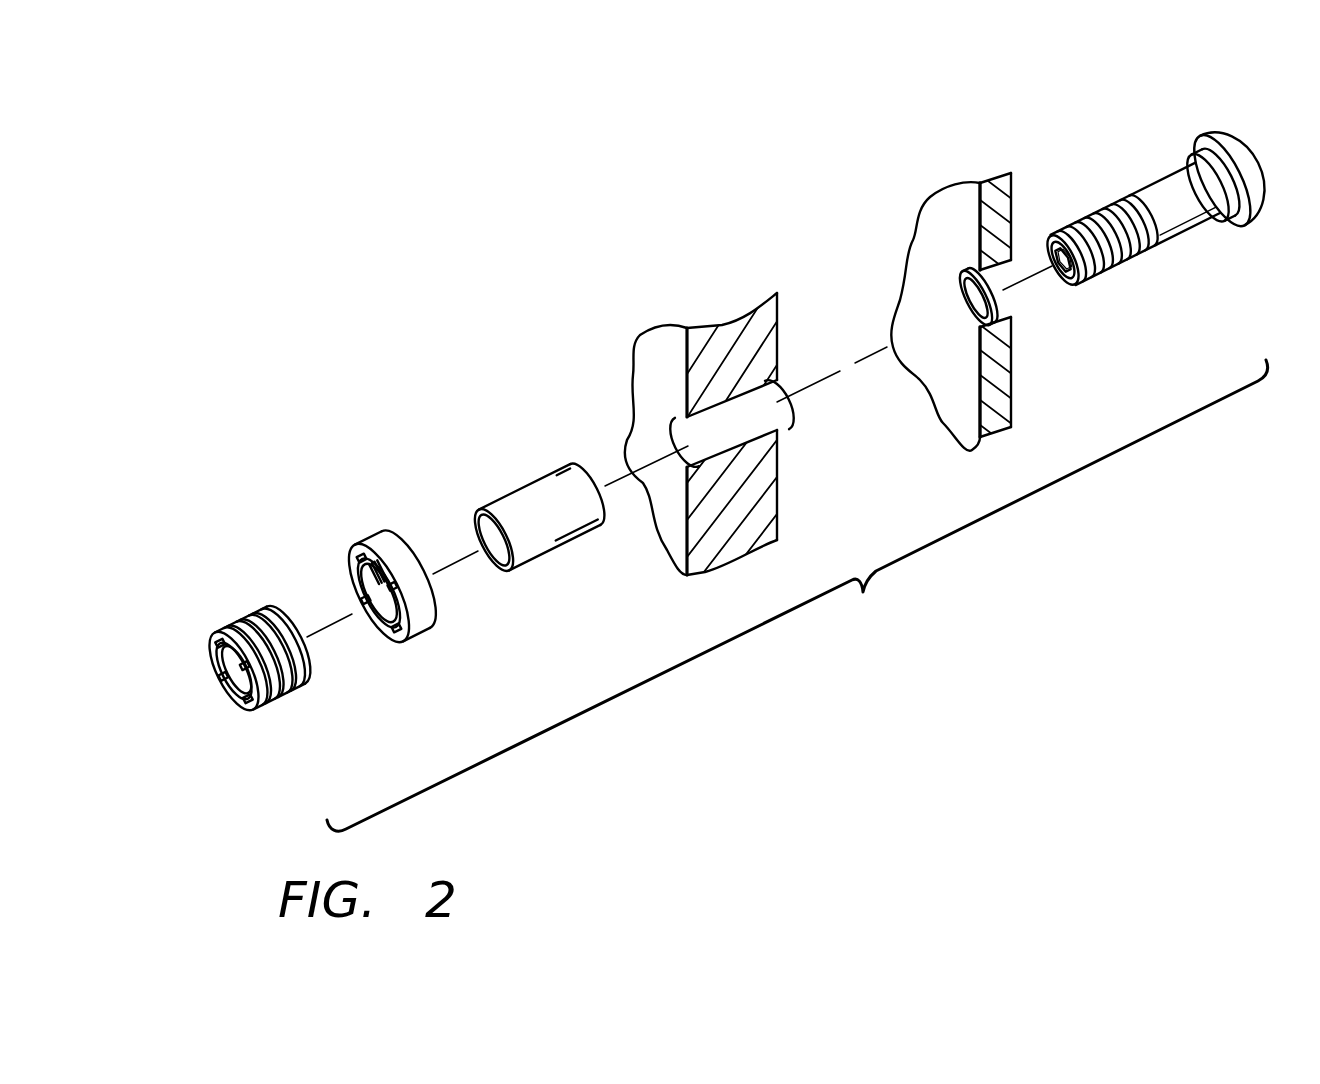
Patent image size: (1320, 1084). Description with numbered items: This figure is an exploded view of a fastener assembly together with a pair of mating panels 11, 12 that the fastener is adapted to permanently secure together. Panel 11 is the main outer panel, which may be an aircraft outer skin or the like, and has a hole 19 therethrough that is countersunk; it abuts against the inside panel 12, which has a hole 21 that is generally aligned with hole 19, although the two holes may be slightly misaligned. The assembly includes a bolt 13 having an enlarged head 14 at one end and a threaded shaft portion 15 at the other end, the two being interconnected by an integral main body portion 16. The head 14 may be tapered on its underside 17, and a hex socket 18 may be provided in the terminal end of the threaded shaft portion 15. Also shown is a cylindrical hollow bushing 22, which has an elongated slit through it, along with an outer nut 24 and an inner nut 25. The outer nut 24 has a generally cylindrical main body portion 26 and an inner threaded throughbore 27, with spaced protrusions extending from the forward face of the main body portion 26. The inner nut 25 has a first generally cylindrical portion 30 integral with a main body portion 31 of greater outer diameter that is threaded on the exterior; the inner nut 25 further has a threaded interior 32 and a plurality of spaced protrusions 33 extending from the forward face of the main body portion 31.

The panel 11 is at (945, 215).
The panel 12 is at (734, 456).
The bolt 13 is at (1160, 207).
The enlarged head 14 is at (1247, 138).
The threaded shaft portion 15 is at (1112, 272).
The main body portion 16 is at (1182, 240).
The underside 17 is at (1250, 228).
The hex socket 18 is at (1053, 258).
The hole 19 is at (983, 312).
The hole 21 is at (730, 437).
The cylindrical hollow bushing 22 is at (561, 553).
The outer nut 24 is at (397, 591).
The inner nut 25 is at (275, 674).
The main body portion 26 is at (433, 638).
The inner threaded throughbore 27 is at (377, 628).
The first generally cylindrical portion 30 is at (292, 620).
The main body portion 31 is at (286, 705).
The threaded interior 32 is at (228, 680).
The spaced protrusions 33 is at (232, 708).